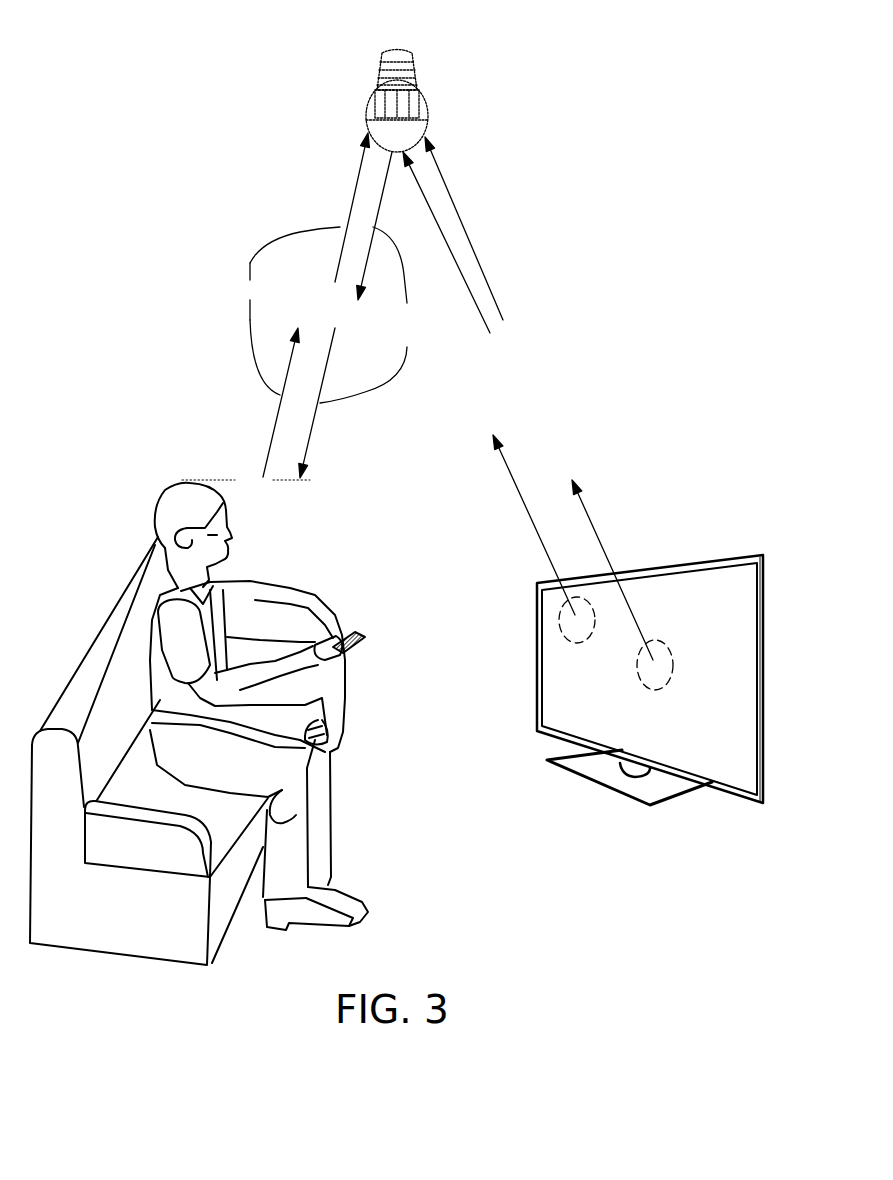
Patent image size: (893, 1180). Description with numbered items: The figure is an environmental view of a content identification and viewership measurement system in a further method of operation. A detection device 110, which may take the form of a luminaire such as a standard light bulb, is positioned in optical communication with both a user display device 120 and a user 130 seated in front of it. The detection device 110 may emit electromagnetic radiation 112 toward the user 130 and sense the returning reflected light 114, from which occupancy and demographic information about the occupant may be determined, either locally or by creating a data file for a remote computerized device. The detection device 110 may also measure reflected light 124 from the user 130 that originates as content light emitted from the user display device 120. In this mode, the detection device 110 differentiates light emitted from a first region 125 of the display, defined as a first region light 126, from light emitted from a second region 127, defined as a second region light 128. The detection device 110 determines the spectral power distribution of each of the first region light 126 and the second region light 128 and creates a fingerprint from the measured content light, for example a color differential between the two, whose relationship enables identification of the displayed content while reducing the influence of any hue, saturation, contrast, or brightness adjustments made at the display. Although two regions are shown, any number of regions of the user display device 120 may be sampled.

The detection device 110 is at (433, 127).
The electromagnetic radiation 112 is at (346, 305).
The reflected light 114 is at (320, 315).
The user display device 120 is at (762, 622).
The reflected light 124 is at (476, 305).
The first region 125 is at (581, 645).
The first region light 126 is at (483, 277).
The second region 127 is at (664, 688).
The second region light 128 is at (608, 560).
The user 130 is at (178, 480).